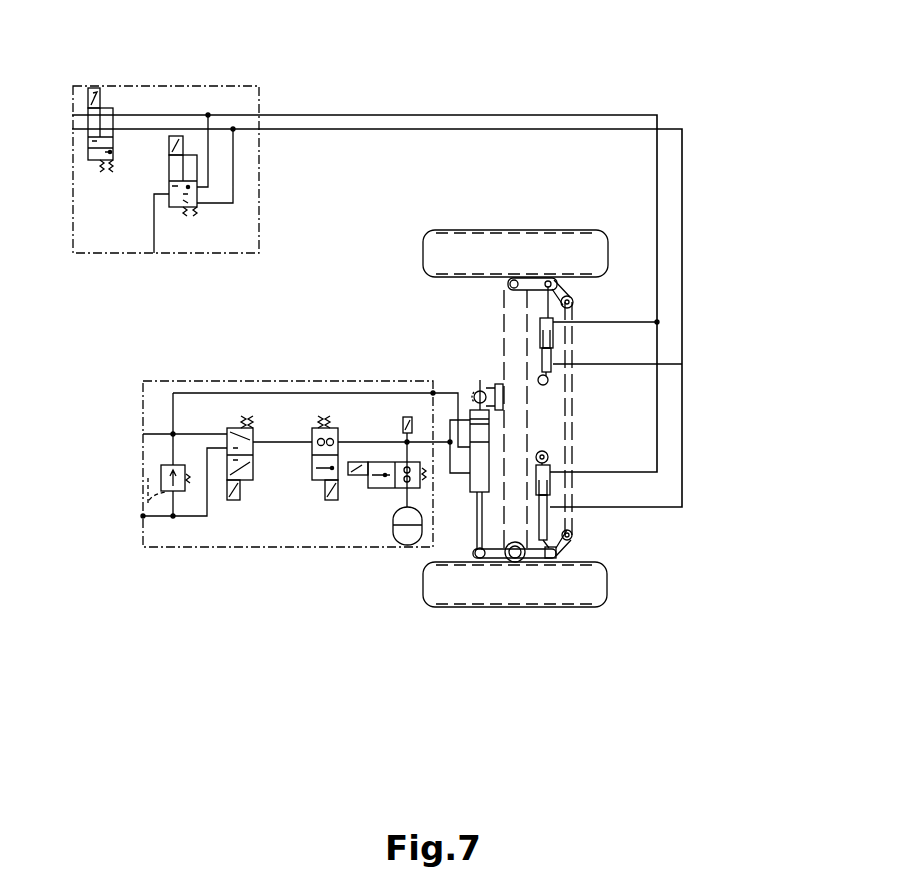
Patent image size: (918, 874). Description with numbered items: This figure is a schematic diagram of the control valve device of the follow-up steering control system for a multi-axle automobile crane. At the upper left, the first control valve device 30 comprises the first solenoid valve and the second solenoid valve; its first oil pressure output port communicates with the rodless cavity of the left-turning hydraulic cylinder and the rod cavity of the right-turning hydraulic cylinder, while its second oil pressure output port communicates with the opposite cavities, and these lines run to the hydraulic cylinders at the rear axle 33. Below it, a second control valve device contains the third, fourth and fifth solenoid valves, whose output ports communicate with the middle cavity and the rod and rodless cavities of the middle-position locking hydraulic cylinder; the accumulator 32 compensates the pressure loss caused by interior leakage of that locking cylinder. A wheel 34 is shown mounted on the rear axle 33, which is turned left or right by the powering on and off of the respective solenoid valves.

The first control valve device 30 is at (165, 103).
The accumulator 32 is at (270, 523).
The rear axle 33 is at (515, 502).
The wheel 34 is at (552, 243).